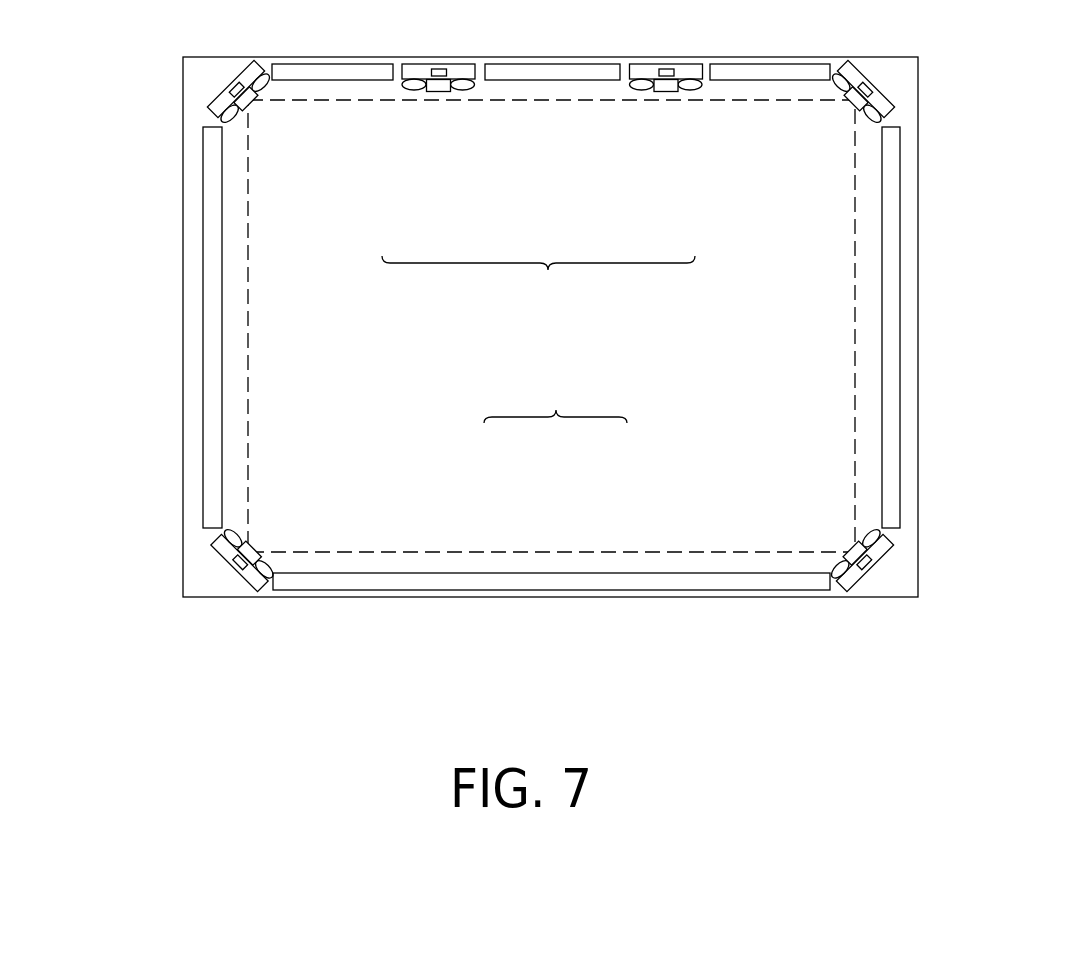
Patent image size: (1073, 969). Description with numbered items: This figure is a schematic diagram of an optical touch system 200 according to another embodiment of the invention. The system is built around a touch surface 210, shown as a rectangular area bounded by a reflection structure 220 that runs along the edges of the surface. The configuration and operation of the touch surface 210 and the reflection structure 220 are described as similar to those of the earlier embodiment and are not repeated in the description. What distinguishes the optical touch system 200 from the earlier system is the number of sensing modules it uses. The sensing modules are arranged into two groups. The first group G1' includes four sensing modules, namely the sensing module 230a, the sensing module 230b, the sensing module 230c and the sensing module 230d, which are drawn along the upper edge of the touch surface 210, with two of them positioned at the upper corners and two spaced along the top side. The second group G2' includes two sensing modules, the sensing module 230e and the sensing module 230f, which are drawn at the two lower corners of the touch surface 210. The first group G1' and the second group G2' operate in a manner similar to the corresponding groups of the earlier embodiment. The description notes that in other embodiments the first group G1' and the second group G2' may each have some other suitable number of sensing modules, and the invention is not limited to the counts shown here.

The optical touch system 200 is at (1062, 638).
The touch surface 210 is at (855, 235).
The reflection structure 220 is at (907, 345).
The sensing module 230a is at (269, 91).
The sensing module 230b is at (441, 94).
The sensing module 230c is at (667, 94).
The sensing module 230d is at (834, 90).
The sensing module 230e is at (837, 539).
The sensing module 230f is at (264, 542).
The first group G1' is at (538, 285).
The second group G2' is at (555, 395).